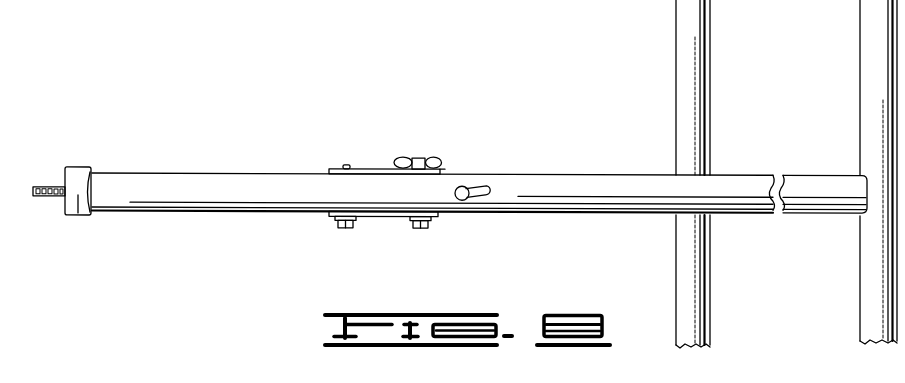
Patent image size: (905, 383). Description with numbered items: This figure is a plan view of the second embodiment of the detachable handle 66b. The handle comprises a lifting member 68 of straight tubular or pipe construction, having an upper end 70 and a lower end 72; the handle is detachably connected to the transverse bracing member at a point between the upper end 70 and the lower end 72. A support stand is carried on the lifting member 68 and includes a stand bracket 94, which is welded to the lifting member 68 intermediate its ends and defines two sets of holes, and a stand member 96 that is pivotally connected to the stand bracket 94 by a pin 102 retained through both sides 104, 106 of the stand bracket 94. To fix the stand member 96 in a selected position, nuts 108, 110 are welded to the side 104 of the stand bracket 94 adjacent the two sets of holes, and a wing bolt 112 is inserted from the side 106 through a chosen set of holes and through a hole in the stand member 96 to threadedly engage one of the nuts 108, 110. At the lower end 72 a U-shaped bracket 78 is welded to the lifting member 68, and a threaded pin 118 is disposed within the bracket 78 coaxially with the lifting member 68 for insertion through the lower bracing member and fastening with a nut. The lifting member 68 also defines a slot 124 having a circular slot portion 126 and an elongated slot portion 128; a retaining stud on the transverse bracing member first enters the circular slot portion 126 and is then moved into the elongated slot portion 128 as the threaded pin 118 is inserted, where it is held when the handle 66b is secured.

The detachable handle 66b is at (516, 124).
The lifting member 68 is at (780, 209).
The upper end 70 is at (843, 183).
The lower end 72 is at (106, 185).
The U-shaped bracket 78 is at (82, 167).
The stand bracket 94 is at (443, 168).
The stand member 96 is at (690, 257).
The pin 102 is at (347, 164).
The side 104 is at (437, 218).
The side 106 is at (380, 168).
The nut 108 is at (417, 227).
The nut 110 is at (342, 227).
The wing bolt 112 is at (437, 157).
The threaded pin 118 is at (48, 197).
The slot 124 is at (489, 203).
The circular slot portion 126 is at (468, 199).
The elongated slot portion 128 is at (490, 186).